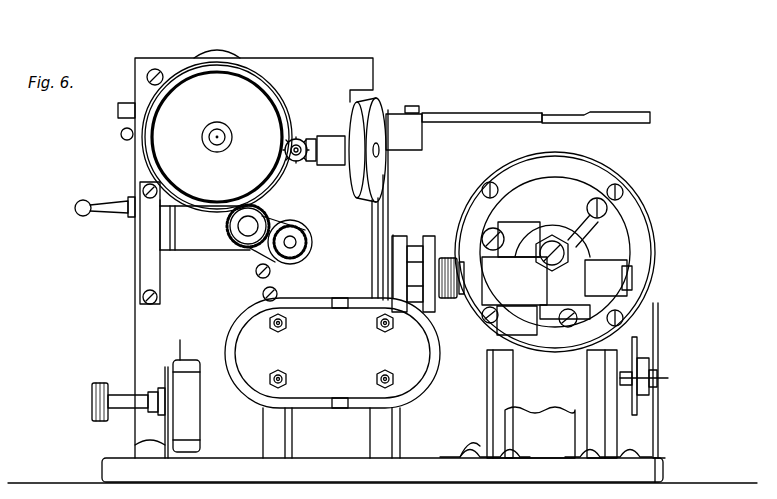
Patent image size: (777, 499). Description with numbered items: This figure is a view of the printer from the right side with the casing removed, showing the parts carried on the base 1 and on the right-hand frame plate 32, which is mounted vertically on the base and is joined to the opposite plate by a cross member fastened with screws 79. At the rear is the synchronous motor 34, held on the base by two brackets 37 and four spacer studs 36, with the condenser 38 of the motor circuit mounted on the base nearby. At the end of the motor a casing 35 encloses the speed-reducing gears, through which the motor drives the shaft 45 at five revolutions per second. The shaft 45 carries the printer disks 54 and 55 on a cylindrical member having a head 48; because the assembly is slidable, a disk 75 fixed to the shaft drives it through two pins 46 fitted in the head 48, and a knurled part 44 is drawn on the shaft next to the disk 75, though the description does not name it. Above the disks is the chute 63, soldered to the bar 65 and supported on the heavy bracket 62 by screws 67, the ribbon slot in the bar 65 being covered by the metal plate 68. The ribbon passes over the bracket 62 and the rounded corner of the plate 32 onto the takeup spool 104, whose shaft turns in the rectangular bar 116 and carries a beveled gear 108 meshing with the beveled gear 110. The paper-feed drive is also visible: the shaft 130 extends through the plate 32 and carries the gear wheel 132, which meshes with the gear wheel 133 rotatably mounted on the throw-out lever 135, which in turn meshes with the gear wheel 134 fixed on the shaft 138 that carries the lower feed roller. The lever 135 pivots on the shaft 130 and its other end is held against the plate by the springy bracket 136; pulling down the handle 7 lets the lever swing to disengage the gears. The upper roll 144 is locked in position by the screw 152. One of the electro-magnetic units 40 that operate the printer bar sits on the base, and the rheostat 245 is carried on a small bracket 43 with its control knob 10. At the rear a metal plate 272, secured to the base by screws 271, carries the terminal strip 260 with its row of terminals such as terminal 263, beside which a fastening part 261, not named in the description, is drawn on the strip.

The base 1 is at (237, 466).
The extension lever or handle 7 is at (103, 214).
The control knob 10 is at (92, 398).
The frame plate 32 is at (144, 345).
The motor 34 is at (636, 214).
The casing 35 is at (575, 252).
The spacer studs 36 is at (494, 383).
The brackets 37 is at (490, 450).
The condenser 38 is at (539, 412).
The polarized electro-magnetic unit 40 is at (346, 396).
The bracket 43 is at (164, 437).
The knurled nut 44 is at (449, 300).
The shaft 45 is at (417, 286).
The pins 46 is at (416, 246).
The head 48 is at (400, 236).
The printer disk 54 is at (386, 250).
The printer disk 55 is at (380, 268).
The bracket 62 is at (422, 142).
The chute 63 is at (614, 112).
The bar 65 is at (500, 113).
The screws 67 is at (416, 106).
The metal plate 68 is at (390, 110).
The disk 75 is at (432, 236).
The screws 79 is at (263, 280).
The spool 104 is at (382, 173).
The beveled gear 108 is at (311, 163).
The beveled gear 110 is at (298, 163).
The rectangular bar 116 is at (331, 136).
The shaft 130 is at (293, 240).
The gear wheel 132 is at (308, 240).
The gear wheel 133 is at (232, 228).
The gear wheel 134 is at (262, 103).
The throw-out lever 135 is at (192, 244).
The bracket 136 is at (146, 277).
The shaft 138 is at (219, 129).
The upper roll 144 is at (226, 50).
The screw 152 is at (157, 69).
The rheostat 245 is at (192, 398).
The terminal strip 260 is at (648, 392).
The shaft 261 is at (660, 379).
The terminal 263 is at (640, 348).
The screws 271 is at (640, 450).
The metal plate 272 is at (660, 325).